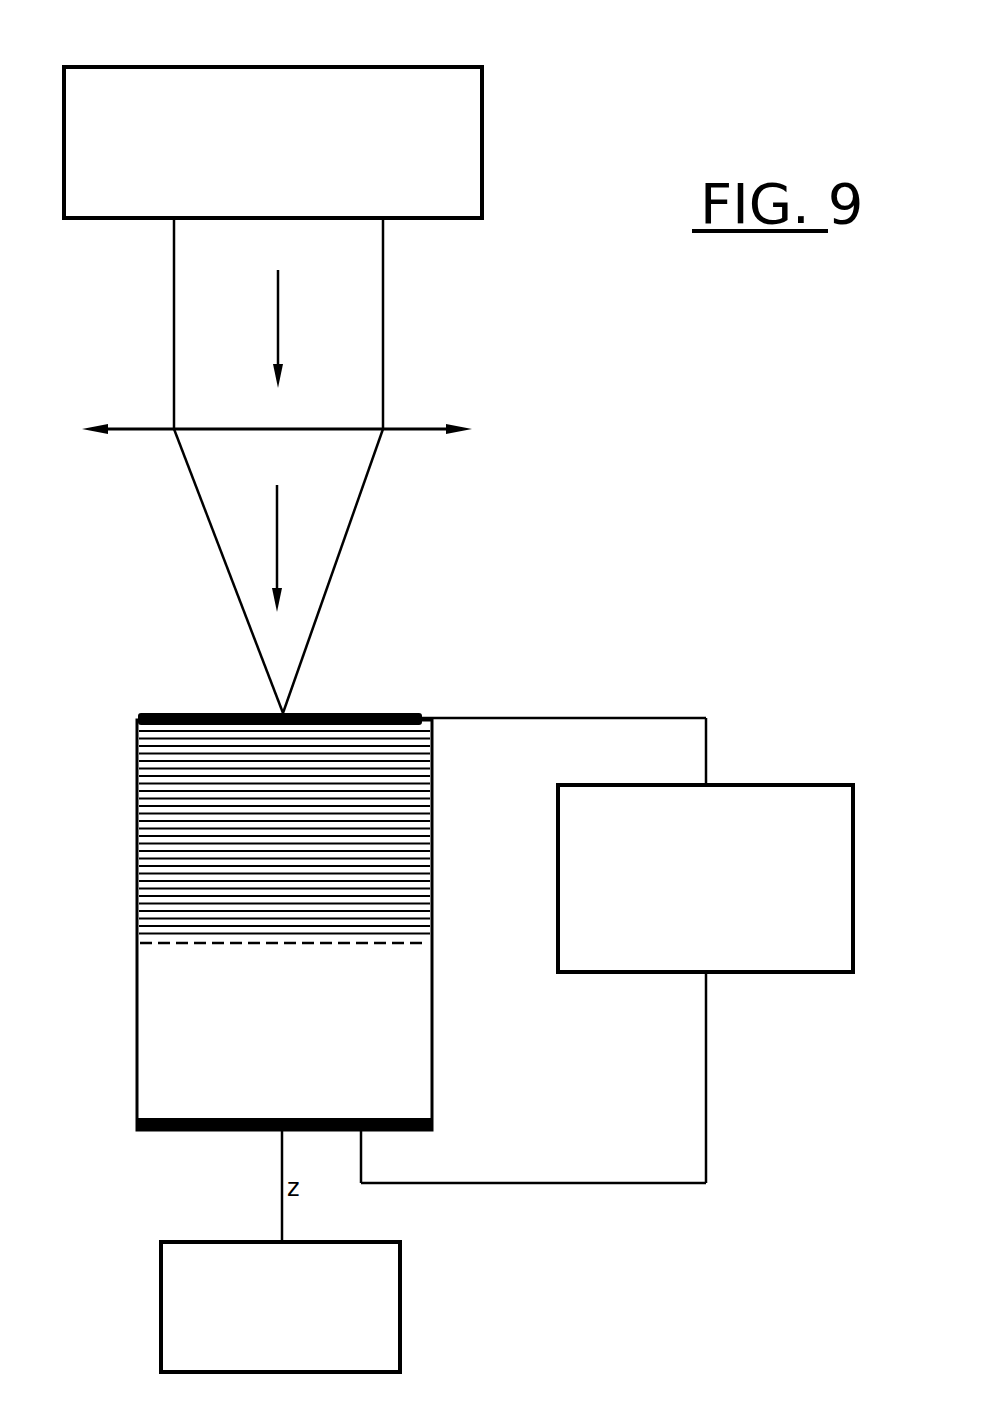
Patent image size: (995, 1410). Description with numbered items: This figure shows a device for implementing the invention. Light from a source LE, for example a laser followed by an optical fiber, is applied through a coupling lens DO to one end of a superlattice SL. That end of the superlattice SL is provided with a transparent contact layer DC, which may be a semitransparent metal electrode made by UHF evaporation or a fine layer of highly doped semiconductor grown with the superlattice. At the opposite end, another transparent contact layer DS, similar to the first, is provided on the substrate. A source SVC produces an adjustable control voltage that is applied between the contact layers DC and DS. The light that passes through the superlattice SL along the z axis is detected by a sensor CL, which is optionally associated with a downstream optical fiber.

The light source LE is at (167, 67).
The coupling lens DO is at (416, 429).
The transparent contact layer DC is at (398, 713).
The superlattice SL is at (134, 890).
The transparent contact layer DS is at (150, 1130).
The control voltage source SVC is at (789, 785).
The sensor CL is at (400, 1322).